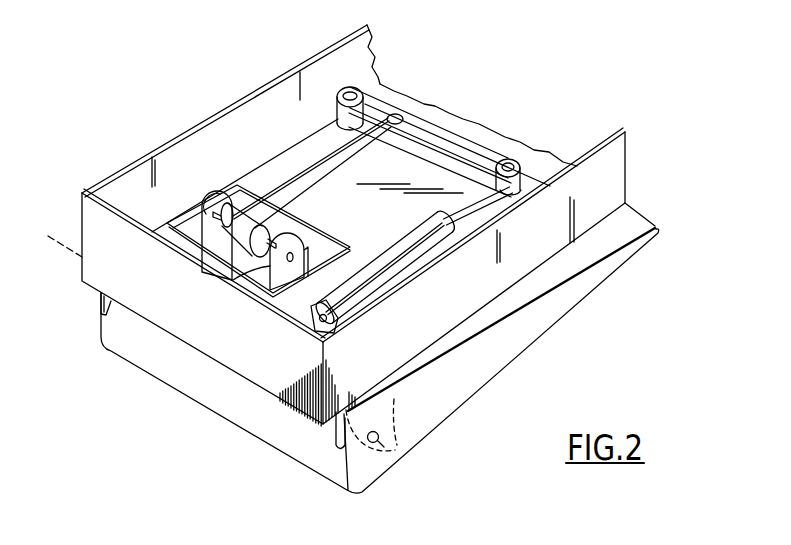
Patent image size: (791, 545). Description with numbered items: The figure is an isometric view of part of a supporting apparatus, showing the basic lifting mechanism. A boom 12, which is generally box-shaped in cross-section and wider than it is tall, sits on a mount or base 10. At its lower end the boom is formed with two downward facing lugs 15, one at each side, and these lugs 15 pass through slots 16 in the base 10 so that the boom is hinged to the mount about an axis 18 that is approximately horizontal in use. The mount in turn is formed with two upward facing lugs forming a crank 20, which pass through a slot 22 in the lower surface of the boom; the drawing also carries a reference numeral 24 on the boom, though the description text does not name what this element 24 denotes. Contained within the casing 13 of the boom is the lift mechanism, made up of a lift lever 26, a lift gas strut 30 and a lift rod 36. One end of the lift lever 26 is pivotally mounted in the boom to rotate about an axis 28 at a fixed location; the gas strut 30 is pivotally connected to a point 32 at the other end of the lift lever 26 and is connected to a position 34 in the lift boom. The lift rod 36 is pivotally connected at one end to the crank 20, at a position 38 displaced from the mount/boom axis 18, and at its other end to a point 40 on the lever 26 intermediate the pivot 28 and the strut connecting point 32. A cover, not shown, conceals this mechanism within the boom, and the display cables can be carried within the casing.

The base 10 is at (582, 289).
The boom 12 is at (631, 185).
The casing 13 is at (611, 159).
The downward facing lugs 15 is at (397, 375).
The slots 16 is at (336, 441).
The axis 18 is at (397, 452).
The crank 20 is at (270, 268).
The slot 22 is at (250, 203).
The box bottom wall 24 is at (313, 140).
The lift lever 26 is at (457, 133).
The axis 28 is at (343, 85).
The lift gas strut 30 is at (407, 283).
The point 32 is at (512, 158).
The position 34 is at (308, 326).
The lift rod 36 is at (334, 161).
The position 38 is at (262, 220).
The point 40 is at (400, 110).